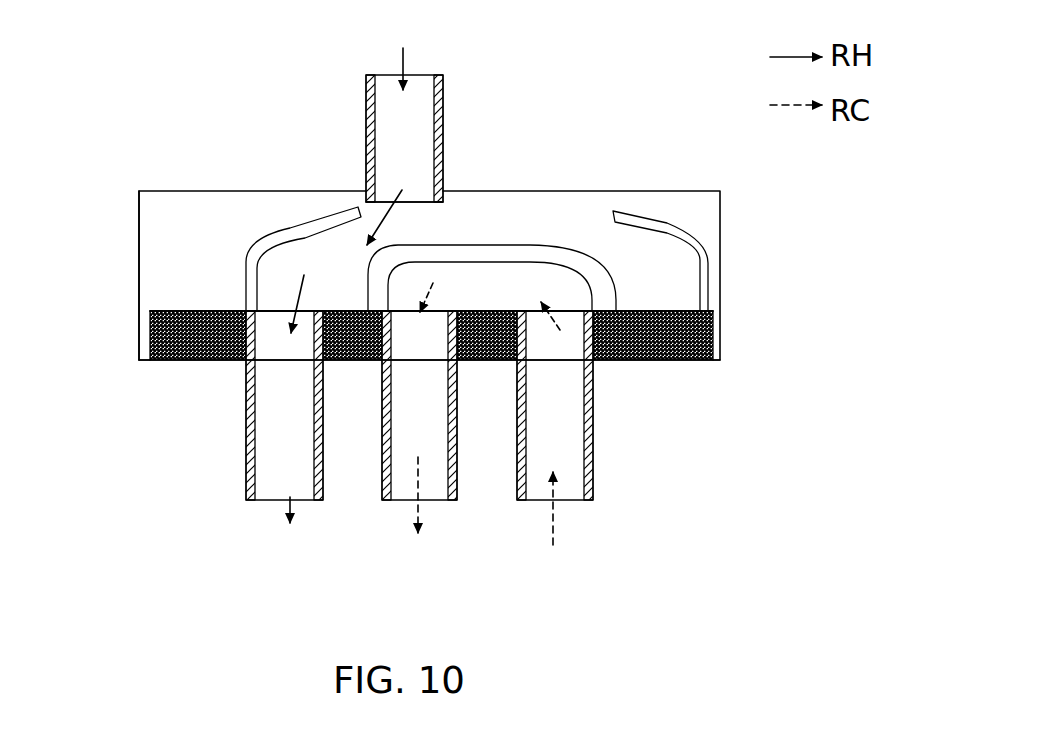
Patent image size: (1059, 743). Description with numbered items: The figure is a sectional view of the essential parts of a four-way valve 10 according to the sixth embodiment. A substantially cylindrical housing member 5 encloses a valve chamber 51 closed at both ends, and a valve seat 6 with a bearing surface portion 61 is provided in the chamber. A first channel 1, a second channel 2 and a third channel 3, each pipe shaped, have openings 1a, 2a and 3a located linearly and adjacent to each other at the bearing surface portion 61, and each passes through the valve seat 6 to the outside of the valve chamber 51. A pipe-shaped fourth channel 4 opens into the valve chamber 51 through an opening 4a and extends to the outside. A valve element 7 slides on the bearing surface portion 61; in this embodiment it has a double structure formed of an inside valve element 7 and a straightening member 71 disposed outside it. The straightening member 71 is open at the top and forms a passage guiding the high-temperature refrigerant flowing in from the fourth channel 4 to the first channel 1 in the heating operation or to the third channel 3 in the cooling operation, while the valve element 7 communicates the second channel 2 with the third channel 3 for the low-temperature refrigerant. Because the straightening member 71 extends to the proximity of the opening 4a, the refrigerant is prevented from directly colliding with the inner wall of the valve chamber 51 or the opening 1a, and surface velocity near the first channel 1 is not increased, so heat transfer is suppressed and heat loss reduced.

The four-way valve 10 is at (87, 107).
The first channel 1 is at (263, 463).
The opening of the first channel 1a is at (280, 311).
The second channel 2 is at (397, 463).
The opening of the second channel 2a is at (438, 270).
The third channel 3 is at (530, 468).
The opening of the third channel 3a is at (567, 308).
The fourth channel 4 is at (446, 90).
The opening of the fourth channel 4a is at (442, 170).
The housing member 5 is at (177, 190).
The valve chamber 51 is at (150, 221).
The valve seat 6 is at (633, 333).
The bearing surface portion 61 is at (171, 311).
The valve element 7 is at (608, 298).
The straightening member 71 is at (288, 228).